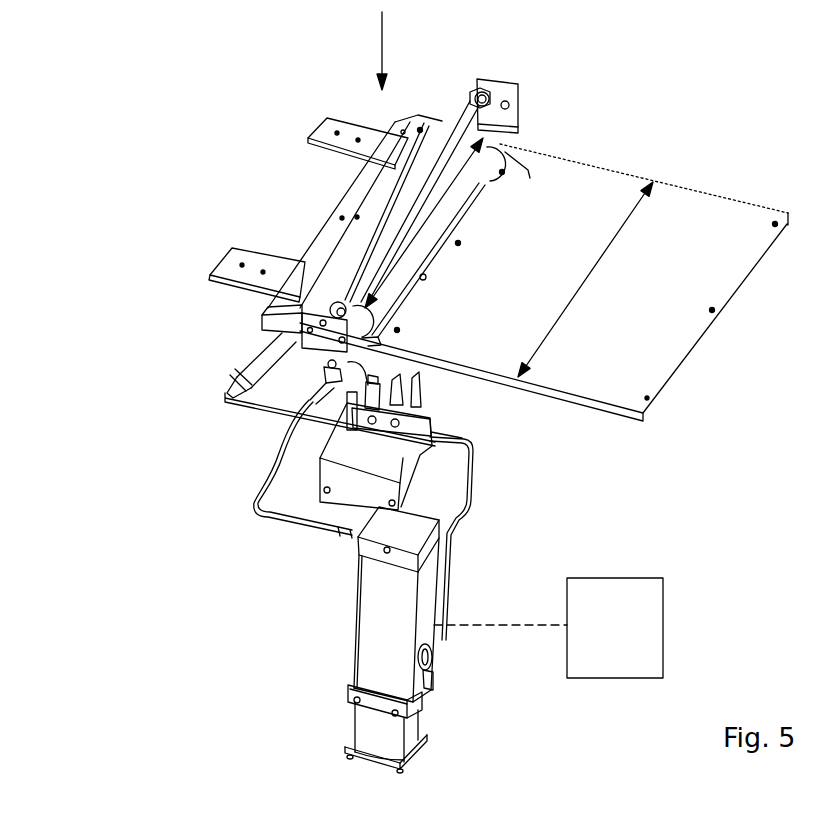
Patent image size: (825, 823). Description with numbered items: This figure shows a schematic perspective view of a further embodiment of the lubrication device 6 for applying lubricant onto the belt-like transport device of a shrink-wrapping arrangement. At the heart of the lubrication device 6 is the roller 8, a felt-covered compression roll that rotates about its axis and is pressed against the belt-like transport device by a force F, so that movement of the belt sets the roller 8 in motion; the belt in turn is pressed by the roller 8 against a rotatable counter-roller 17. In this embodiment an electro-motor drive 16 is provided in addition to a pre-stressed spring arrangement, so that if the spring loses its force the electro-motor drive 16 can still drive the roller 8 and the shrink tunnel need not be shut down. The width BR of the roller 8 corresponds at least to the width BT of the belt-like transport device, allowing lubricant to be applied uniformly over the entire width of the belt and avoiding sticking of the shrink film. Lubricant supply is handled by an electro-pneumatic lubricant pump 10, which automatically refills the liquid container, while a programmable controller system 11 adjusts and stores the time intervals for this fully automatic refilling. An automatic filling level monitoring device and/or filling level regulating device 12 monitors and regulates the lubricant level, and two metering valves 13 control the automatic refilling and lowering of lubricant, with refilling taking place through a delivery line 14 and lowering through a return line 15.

The lubrication device 6 is at (160, 474).
The roller 8 is at (448, 211).
The electro-pneumatic lubricant pump 10 is at (338, 631).
The programmable controller system 11 is at (629, 644).
The automatic filling level monitoring device and/or filling level regulating device 12 is at (431, 480).
The metering valves 13 is at (388, 412).
The delivery line 14 is at (460, 522).
The return line 15 is at (270, 513).
The electro-motor drive 16 is at (313, 356).
The rotatable counter-roller 17 is at (465, 116).
The force F is at (382, 41).
The width of the roller BR is at (468, 171).
The width of the belt-like transport device BT is at (646, 200).